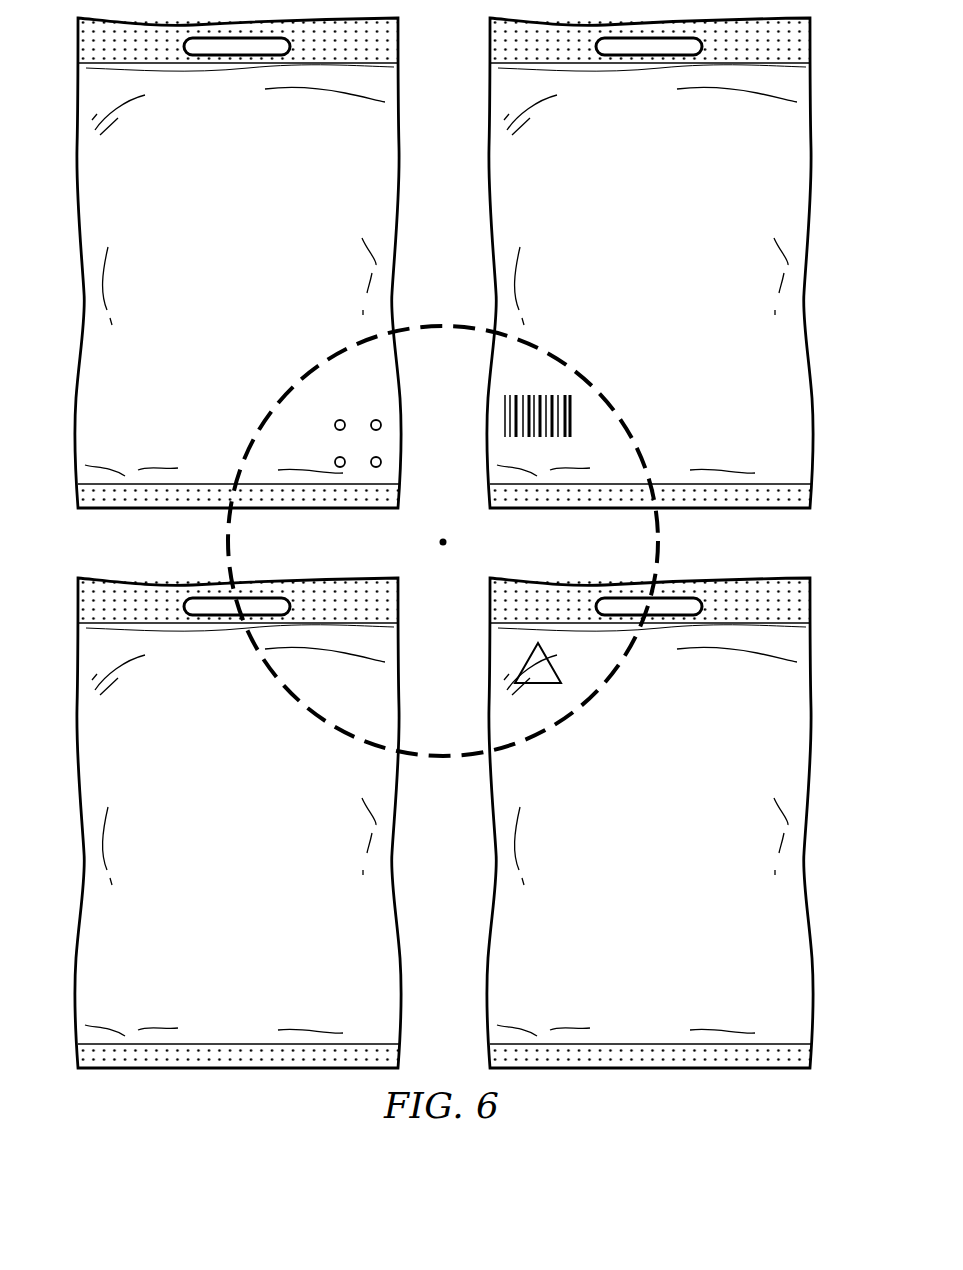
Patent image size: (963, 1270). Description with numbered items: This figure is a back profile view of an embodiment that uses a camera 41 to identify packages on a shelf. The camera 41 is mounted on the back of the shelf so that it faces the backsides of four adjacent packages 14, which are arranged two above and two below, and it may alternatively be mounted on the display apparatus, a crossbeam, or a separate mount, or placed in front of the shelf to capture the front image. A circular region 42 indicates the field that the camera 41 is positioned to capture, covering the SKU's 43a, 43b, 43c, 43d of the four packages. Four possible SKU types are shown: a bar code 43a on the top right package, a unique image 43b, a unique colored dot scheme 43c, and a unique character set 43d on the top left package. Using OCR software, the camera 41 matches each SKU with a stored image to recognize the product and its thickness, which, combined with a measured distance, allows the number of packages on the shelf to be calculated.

The bag 14 is at (77, 154).
The camera 41 is at (442, 532).
The circular field of view 42 is at (338, 352).
The bar code 43a is at (570, 415).
The unique image 43b is at (549, 663).
The unique colored dot scheme 43c is at (318, 683).
The unique character set 43d is at (371, 419).